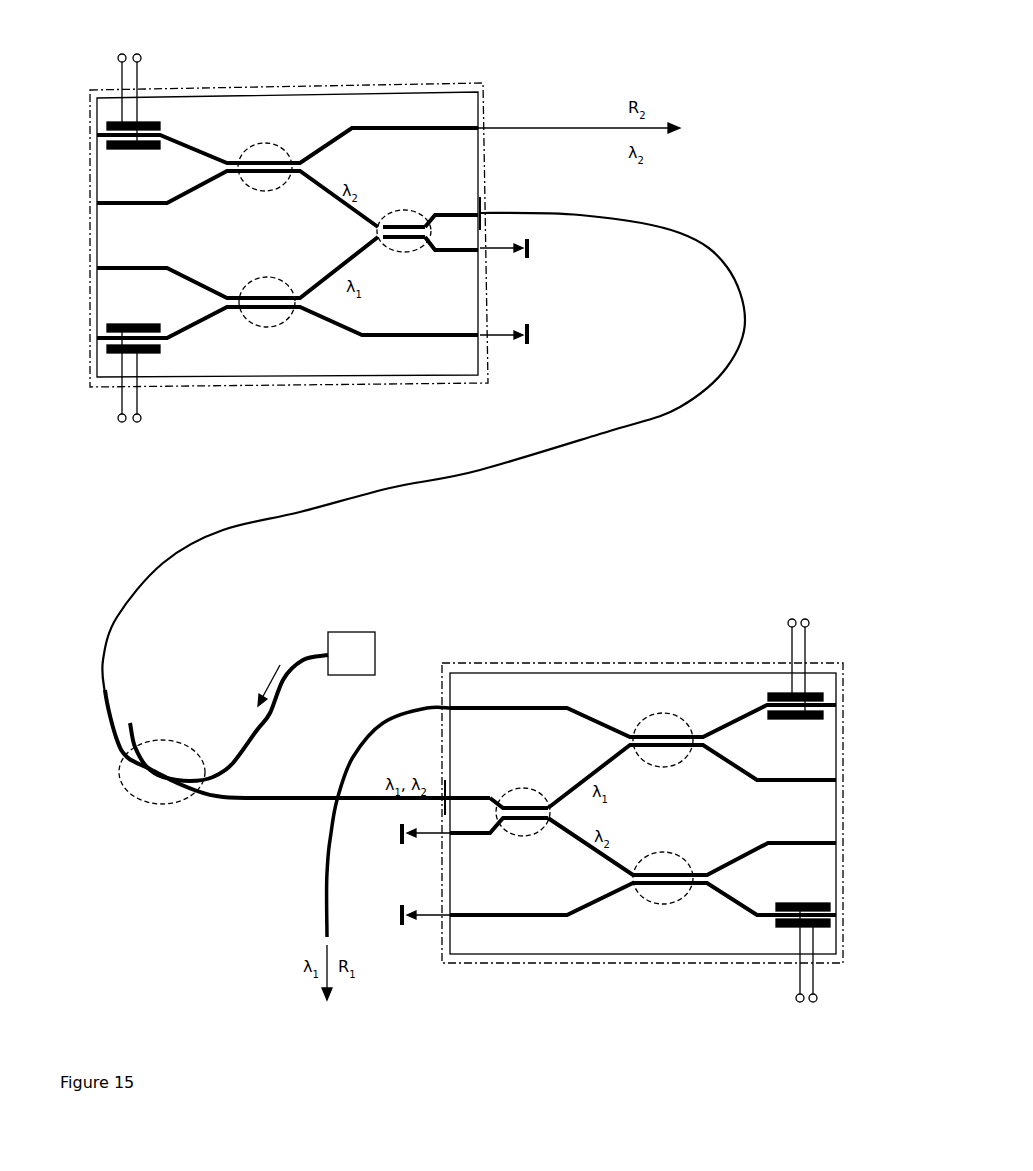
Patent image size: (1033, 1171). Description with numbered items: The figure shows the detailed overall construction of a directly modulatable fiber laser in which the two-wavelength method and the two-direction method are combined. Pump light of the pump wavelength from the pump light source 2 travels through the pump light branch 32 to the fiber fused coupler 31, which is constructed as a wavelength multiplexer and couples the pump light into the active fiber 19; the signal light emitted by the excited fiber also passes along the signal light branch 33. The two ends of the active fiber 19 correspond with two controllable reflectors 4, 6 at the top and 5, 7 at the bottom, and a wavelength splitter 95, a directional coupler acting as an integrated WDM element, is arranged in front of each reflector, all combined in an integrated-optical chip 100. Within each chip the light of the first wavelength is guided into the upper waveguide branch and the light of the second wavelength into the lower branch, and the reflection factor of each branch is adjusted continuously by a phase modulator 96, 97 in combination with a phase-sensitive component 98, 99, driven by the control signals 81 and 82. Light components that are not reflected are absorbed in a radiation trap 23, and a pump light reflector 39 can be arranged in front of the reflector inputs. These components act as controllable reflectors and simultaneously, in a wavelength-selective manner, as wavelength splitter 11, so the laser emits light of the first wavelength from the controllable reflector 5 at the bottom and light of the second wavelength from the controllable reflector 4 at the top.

The pump light source 2 is at (357, 633).
The controllable reflector 4 is at (324, 201).
The controllable reflector 5 is at (642, 782).
The controllable reflector 6 is at (472, 82).
The controllable reflector 7 is at (536, 661).
The wavelength splitter 11 is at (466, 489).
The active fiber 19 is at (683, 407).
The radiation trap 23 is at (529, 262).
The fiber fused coupler 31 is at (155, 803).
The pump light branch 32 is at (230, 762).
The signal light branch 33 is at (227, 800).
The pump light reflector 39 is at (482, 203).
The control signal 81 is at (129, 239).
The control signal 82 is at (805, 810).
The wavelength splitter 95 is at (423, 215).
The phase modulator 96 is at (158, 120).
The phase modulator 97 is at (777, 923).
The phase-sensitive component 98 is at (278, 142).
The phase-sensitive component 99 is at (653, 902).
The integrated-optical chip 100 is at (415, 378).